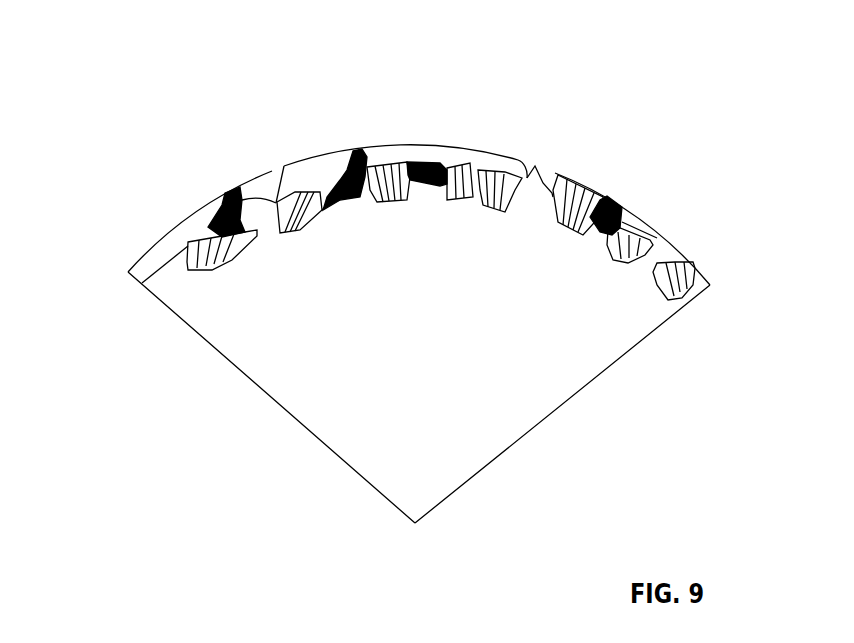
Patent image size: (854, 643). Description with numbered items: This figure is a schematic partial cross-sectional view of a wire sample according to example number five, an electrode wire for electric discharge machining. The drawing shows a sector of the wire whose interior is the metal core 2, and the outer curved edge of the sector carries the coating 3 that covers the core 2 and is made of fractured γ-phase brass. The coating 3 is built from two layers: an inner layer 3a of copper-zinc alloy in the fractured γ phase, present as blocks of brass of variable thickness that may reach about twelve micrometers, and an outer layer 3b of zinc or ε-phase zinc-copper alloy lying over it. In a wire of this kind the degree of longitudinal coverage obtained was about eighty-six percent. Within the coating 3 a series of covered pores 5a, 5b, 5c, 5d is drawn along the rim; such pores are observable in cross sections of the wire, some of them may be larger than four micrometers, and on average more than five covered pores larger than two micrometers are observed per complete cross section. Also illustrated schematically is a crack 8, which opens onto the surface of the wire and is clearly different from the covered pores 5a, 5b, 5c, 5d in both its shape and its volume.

The metal core 2 is at (350, 333).
The coating 3 is at (131, 282).
The inner layer 3a is at (680, 272).
The outer layer 3b is at (637, 225).
The covered pore 5a is at (217, 226).
The covered pore 5b is at (343, 182).
The covered pore 5c is at (433, 165).
The covered pore 5d is at (619, 210).
The crack 8 is at (477, 170).